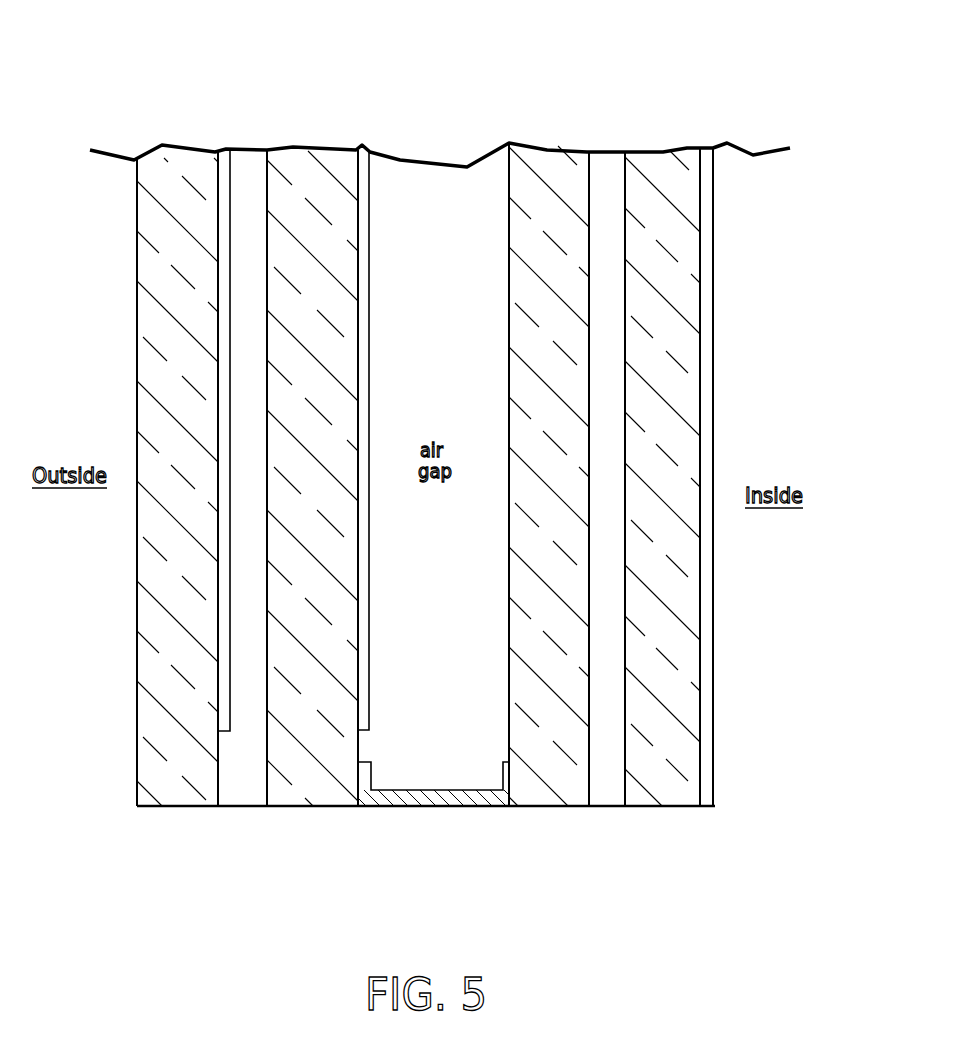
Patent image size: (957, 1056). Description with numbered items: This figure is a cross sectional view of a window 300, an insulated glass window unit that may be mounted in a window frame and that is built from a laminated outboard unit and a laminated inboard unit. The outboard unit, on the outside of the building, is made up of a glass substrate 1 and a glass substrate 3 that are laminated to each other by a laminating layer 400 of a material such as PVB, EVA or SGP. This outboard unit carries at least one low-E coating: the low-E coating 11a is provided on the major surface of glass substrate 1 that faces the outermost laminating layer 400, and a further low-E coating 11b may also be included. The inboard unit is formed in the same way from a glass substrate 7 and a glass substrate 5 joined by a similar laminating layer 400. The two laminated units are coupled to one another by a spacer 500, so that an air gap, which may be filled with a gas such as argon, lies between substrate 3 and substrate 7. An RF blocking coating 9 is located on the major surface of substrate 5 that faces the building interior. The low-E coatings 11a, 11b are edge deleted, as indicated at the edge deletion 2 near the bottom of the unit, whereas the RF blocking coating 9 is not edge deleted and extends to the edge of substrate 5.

The window 300 is at (471, 87).
The glass substrate 1 is at (157, 687).
The glass substrate 3 is at (310, 788).
The glass substrate 7 is at (552, 163).
The glass substrate 5 is at (685, 262).
The laminating layer 400 is at (245, 167).
The low-E coating 11a is at (230, 723).
The low-E coating 11b is at (369, 716).
The edge deletion 2 is at (247, 764).
The spacer 500 is at (467, 798).
The RF blocking coating 9 is at (707, 783).